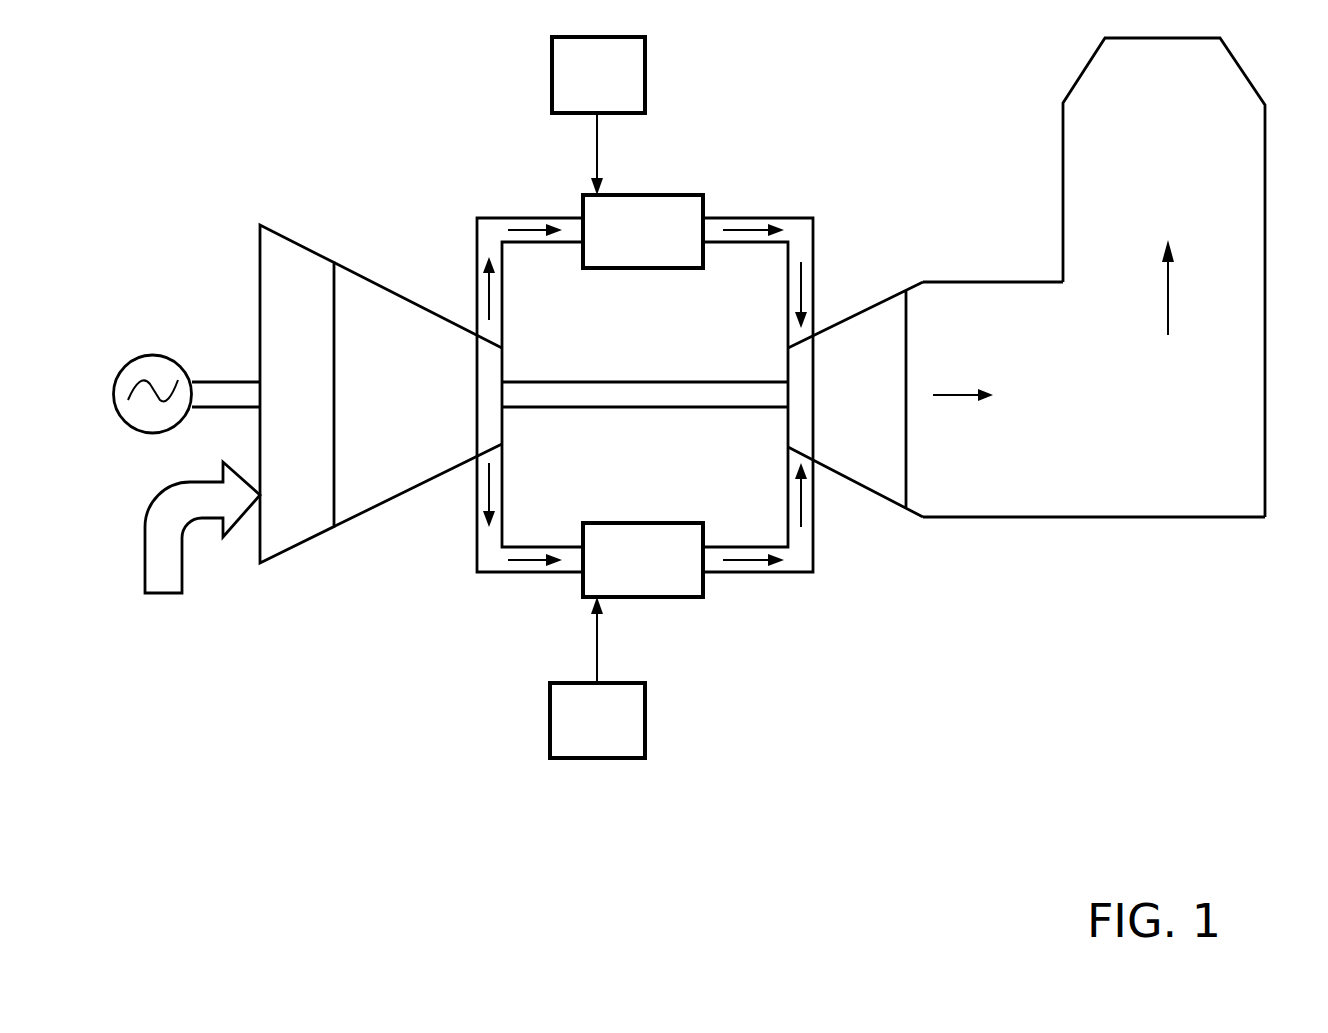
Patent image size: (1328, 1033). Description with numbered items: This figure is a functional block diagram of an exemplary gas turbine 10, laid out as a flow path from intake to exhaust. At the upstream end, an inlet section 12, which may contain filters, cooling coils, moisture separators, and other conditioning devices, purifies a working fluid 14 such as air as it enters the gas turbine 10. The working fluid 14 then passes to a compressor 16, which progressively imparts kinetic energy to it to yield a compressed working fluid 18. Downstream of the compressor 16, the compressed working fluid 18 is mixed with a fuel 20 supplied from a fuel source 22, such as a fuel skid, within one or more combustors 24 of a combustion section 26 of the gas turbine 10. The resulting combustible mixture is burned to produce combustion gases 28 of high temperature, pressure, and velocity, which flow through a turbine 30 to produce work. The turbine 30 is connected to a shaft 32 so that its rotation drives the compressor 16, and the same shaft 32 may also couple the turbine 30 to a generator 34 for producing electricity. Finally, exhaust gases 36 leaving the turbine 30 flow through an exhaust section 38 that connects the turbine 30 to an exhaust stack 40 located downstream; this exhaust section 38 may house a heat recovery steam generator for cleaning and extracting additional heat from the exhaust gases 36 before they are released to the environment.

The gas turbine 10 is at (1006, 836).
The inlet section 12 is at (282, 412).
The working fluid 14 is at (163, 595).
The compressor 16 is at (398, 412).
The compressed working fluid 18 is at (486, 306).
The fuel 20 is at (600, 668).
The fuel source 22 is at (582, 90).
The combustors 24 is at (626, 248).
The combustion section 26 is at (813, 762).
The combustion gases 28 is at (801, 291).
The turbine 30 is at (832, 412).
The shaft 32 is at (637, 407).
The generator 34 is at (148, 353).
The exhaust gases 36 is at (952, 397).
The exhaust section 38 is at (1147, 411).
The exhaust stack 40 is at (1267, 163).